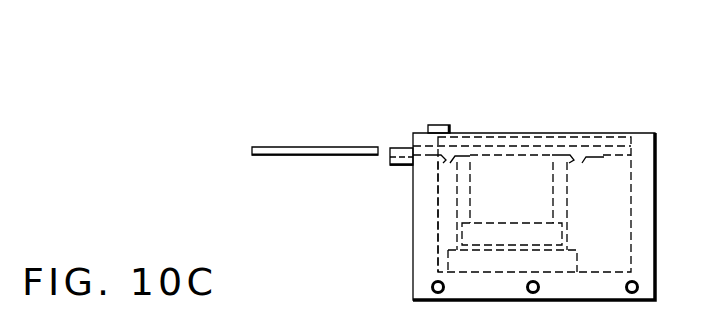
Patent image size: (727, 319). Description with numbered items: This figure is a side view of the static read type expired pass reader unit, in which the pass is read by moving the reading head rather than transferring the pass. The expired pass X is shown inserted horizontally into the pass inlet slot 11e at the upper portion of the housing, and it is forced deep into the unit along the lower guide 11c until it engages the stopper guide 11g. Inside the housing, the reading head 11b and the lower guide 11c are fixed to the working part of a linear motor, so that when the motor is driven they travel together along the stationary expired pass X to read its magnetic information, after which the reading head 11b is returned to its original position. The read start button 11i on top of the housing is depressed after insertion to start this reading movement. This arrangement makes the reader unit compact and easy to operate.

The expired pass X is at (332, 156).
The pass inlet slot 11e is at (402, 148).
The read start button 11i is at (440, 125).
The lower guide 11c is at (518, 158).
The stopper guide 11g is at (604, 152).
The reading head 11b is at (556, 187).